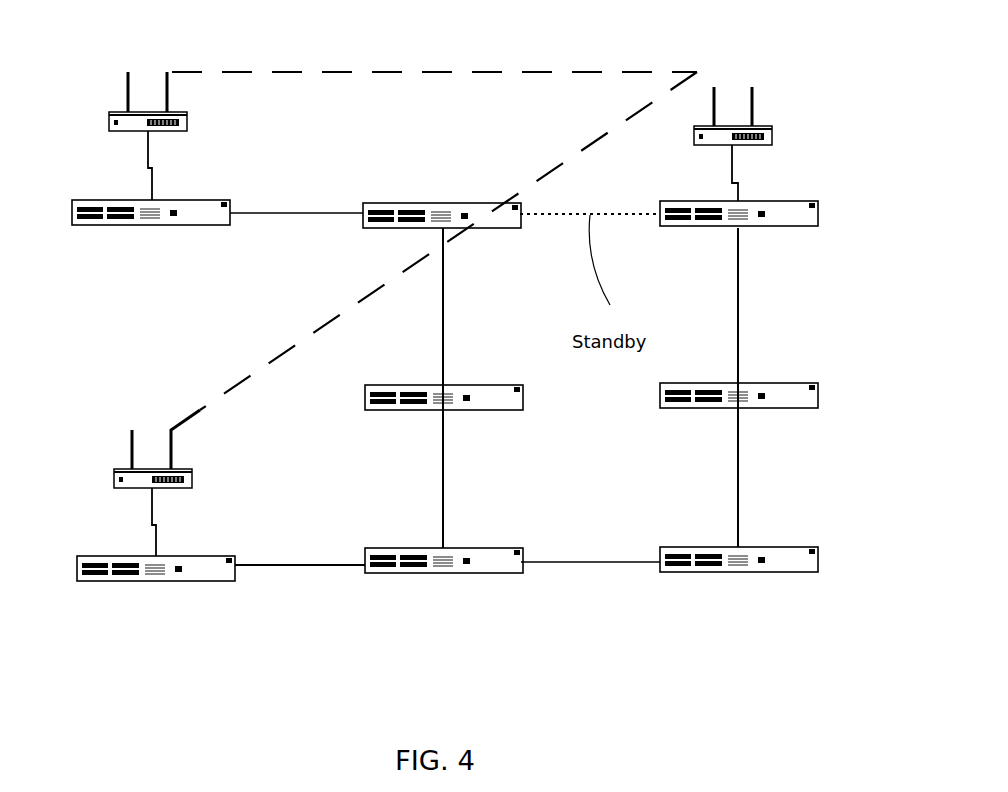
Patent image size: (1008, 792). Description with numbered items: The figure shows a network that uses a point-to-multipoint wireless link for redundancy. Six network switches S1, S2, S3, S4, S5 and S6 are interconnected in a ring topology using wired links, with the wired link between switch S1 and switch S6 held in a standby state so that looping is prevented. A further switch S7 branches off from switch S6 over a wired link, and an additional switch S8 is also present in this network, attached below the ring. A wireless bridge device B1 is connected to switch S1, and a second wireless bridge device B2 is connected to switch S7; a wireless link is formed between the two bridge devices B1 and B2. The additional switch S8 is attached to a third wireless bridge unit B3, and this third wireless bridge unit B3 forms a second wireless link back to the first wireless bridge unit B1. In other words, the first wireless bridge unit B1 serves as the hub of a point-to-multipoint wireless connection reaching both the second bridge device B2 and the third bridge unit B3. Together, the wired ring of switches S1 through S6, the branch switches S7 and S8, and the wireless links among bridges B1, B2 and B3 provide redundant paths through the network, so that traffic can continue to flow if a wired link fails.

The wireless bridge device B1 is at (731, 144).
The wireless bridge device B2 is at (148, 136).
The third wireless bridge unit B3 is at (151, 483).
The network switch S1 is at (739, 230).
The network switch S2 is at (739, 413).
The network switch S3 is at (739, 576).
The network switch S4 is at (444, 577).
The network switch S5 is at (444, 415).
The network switch S6 is at (442, 232).
The network switch S7 is at (151, 228).
The additional switch S8 is at (156, 585).